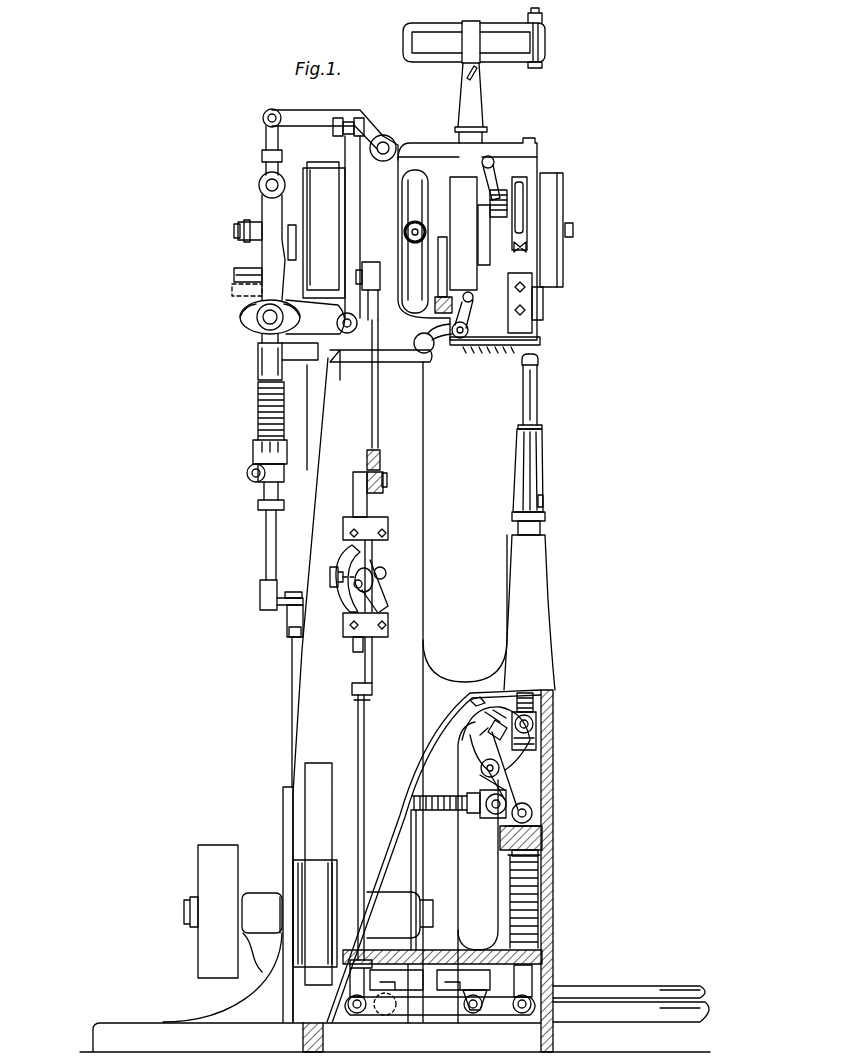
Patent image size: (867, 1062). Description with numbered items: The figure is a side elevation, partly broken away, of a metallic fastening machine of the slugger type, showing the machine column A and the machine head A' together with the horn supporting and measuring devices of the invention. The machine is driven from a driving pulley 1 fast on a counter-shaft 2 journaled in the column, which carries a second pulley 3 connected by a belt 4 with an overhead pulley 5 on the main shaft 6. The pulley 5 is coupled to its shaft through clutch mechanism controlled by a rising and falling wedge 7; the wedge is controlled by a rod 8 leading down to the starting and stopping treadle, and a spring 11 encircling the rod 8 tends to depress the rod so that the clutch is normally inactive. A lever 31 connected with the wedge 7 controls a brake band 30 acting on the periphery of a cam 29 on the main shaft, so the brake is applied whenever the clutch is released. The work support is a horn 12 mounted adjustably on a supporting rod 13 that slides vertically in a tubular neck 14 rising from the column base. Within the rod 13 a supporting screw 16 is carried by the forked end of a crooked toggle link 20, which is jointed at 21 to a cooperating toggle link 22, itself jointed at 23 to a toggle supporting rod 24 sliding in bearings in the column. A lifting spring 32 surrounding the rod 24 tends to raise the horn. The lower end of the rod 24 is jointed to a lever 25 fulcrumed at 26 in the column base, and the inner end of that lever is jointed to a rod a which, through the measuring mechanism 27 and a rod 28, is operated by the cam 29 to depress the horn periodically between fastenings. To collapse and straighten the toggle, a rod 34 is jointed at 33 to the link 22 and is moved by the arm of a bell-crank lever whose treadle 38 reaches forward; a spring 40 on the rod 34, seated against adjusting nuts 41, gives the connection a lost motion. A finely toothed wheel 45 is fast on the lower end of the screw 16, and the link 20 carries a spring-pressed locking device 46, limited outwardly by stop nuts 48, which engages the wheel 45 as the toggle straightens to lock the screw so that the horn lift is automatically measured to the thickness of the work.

The driving pulley 1 is at (222, 933).
The counter-shaft 2 is at (192, 905).
The second pulley 3 is at (293, 877).
The belt 4 is at (318, 193).
The overhead pulley 5 is at (310, 166).
The main shaft 6 is at (236, 230).
The wedge 7 is at (270, 254).
The wedge rod 8 is at (291, 652).
The spring 11 is at (262, 412).
The horn 12 is at (542, 445).
The supporting rod 13 is at (546, 530).
The tubular neck 14 is at (551, 585).
The supporting screw 16 is at (535, 700).
The toggle link 20 is at (490, 710).
The toggle joint 21 is at (500, 770).
The toggle link 22 is at (492, 784).
The joint 23 is at (533, 813).
The toggle supporting rod 24 is at (538, 976).
The lever 25 is at (430, 1010).
The fulcrum 26 is at (356, 720).
The measuring mechanism 27 is at (368, 597).
The rod 28 is at (378, 413).
The cam 29 is at (355, 228).
The brake band 30 is at (345, 290).
The lever 31 is at (306, 116).
The lifting spring 32 is at (540, 898).
The joint 33 is at (496, 814).
The toggle operating rod 34 is at (436, 794).
The treadle 38 is at (628, 995).
The spring 40 is at (433, 812).
The adjusting nuts 41 is at (480, 830).
The toothed wheel 45 is at (540, 745).
The locking device 46 is at (505, 736).
The stop nuts 48 is at (466, 697).
The rod a is at (356, 701).
The machine column A is at (382, 682).
The machine head A' is at (485, 231).